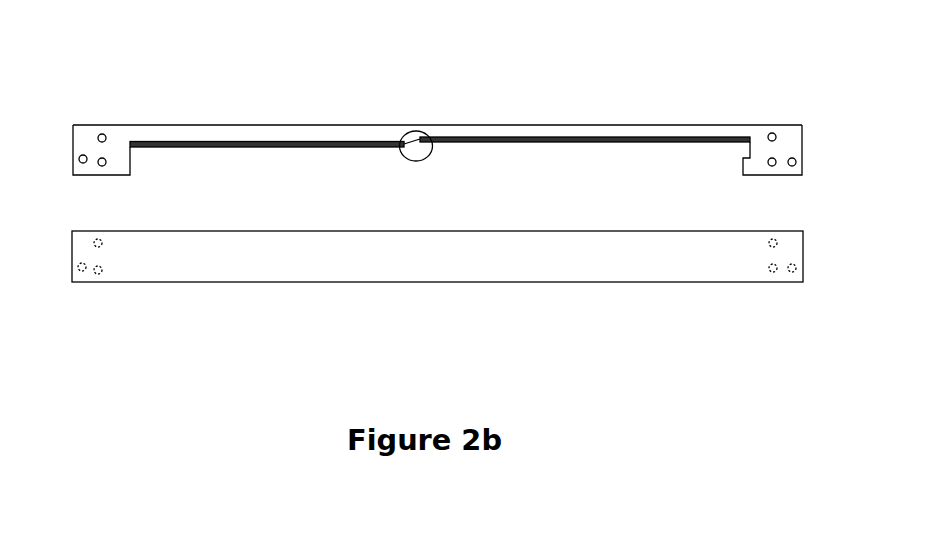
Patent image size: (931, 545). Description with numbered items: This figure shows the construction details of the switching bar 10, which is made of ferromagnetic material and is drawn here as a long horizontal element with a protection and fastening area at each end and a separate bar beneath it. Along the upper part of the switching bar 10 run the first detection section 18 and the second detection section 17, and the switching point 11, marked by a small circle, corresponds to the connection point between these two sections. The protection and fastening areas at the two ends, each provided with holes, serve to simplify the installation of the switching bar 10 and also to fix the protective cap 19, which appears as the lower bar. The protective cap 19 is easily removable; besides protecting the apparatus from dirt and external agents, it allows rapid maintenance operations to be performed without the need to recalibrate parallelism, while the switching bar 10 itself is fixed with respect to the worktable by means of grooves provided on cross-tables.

The switching bar 10 is at (116, 147).
The switching point 11 is at (417, 146).
The second detection section 17 is at (641, 142).
The first detection section 18 is at (228, 147).
The protective cap 19 is at (533, 254).